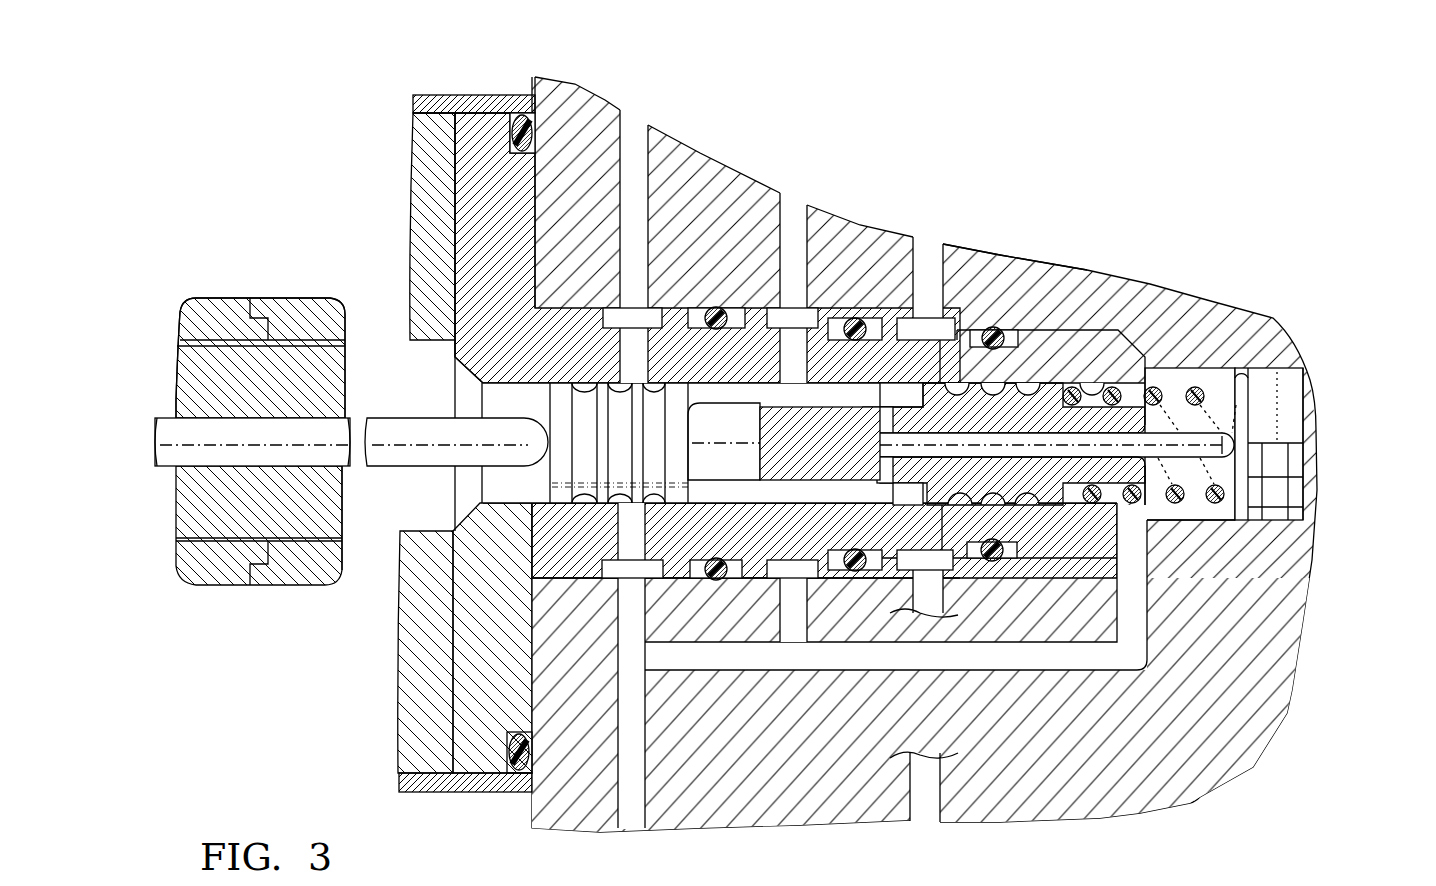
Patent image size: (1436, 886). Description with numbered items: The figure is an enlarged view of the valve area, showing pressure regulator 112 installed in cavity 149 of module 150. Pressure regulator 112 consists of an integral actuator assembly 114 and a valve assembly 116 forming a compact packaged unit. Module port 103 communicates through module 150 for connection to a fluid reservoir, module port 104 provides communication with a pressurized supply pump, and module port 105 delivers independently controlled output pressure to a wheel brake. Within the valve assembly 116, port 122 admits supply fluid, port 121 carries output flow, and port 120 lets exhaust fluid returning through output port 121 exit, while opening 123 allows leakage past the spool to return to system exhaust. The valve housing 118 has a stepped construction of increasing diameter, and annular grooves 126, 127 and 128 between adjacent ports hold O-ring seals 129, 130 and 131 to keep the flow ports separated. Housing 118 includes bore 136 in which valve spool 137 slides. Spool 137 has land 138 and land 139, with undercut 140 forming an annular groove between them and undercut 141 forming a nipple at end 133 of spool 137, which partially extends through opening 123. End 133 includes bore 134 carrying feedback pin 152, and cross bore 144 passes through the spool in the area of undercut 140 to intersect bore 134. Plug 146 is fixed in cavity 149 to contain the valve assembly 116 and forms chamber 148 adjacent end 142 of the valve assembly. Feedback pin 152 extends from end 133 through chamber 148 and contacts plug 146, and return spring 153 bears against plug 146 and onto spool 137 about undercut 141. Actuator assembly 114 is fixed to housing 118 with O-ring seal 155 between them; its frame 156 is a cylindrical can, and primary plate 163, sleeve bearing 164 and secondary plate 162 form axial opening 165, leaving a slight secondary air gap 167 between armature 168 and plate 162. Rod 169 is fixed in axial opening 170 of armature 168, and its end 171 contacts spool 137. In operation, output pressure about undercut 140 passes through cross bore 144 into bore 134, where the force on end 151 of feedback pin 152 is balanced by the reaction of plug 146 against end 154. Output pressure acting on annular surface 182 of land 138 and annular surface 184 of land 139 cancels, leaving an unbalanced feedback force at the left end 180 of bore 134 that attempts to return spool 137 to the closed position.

The module port 103 is at (630, 112).
The module port 104 is at (905, 252).
The module port 105 is at (783, 208).
The pressure regulator 112 is at (470, 90).
The actuator assembly 114 is at (415, 93).
The valve assembly 116 is at (545, 298).
The housing 118 is at (578, 302).
The port 120 is at (625, 336).
The port 121 is at (790, 346).
The port 122 is at (925, 390).
The opening 123 is at (1097, 398).
The annular groove 126 is at (737, 318).
The annular groove 127 is at (872, 572).
The annular groove 128 is at (1012, 342).
The O-ring seal 129 is at (714, 310).
The O-ring seal 130 is at (855, 322).
The O-ring seal 131 is at (993, 330).
The end of valve spool 133 is at (1147, 480).
The bore 134 is at (1145, 440).
The bore 136 is at (1082, 527).
The valve spool 137 is at (1047, 372).
The land 138 is at (557, 405).
The land 139 is at (1062, 392).
The undercut 140 is at (797, 485).
The undercut 141 is at (1118, 528).
The end of valve assembly 142 is at (1147, 522).
The cross bore 144 is at (885, 428).
The plug 146 is at (1290, 397).
The chamber 148 is at (1217, 380).
The cavity 149 is at (1248, 378).
The module 150 is at (1233, 727).
The end of feedback pin 151 is at (908, 458).
The feedback pin 152 is at (1220, 460).
The return spring 153 is at (1190, 418).
The end of feedback pin 154 is at (1236, 447).
The O-ring seal 155 is at (520, 128).
The frame 156 is at (430, 106).
The secondary plate 162 is at (228, 303).
The primary plate 163 is at (435, 140).
The sleeve bearing 164 is at (290, 320).
The axial opening 165 is at (410, 531).
The secondary air gap 167 is at (174, 540).
The armature 168 is at (296, 545).
The rod 169 is at (382, 432).
The axial opening 170 is at (190, 343).
The end of rod 171 is at (517, 440).
The left end of bore 180 is at (868, 455).
The annular surface 182 is at (702, 450).
The annular surface 184 is at (937, 395).